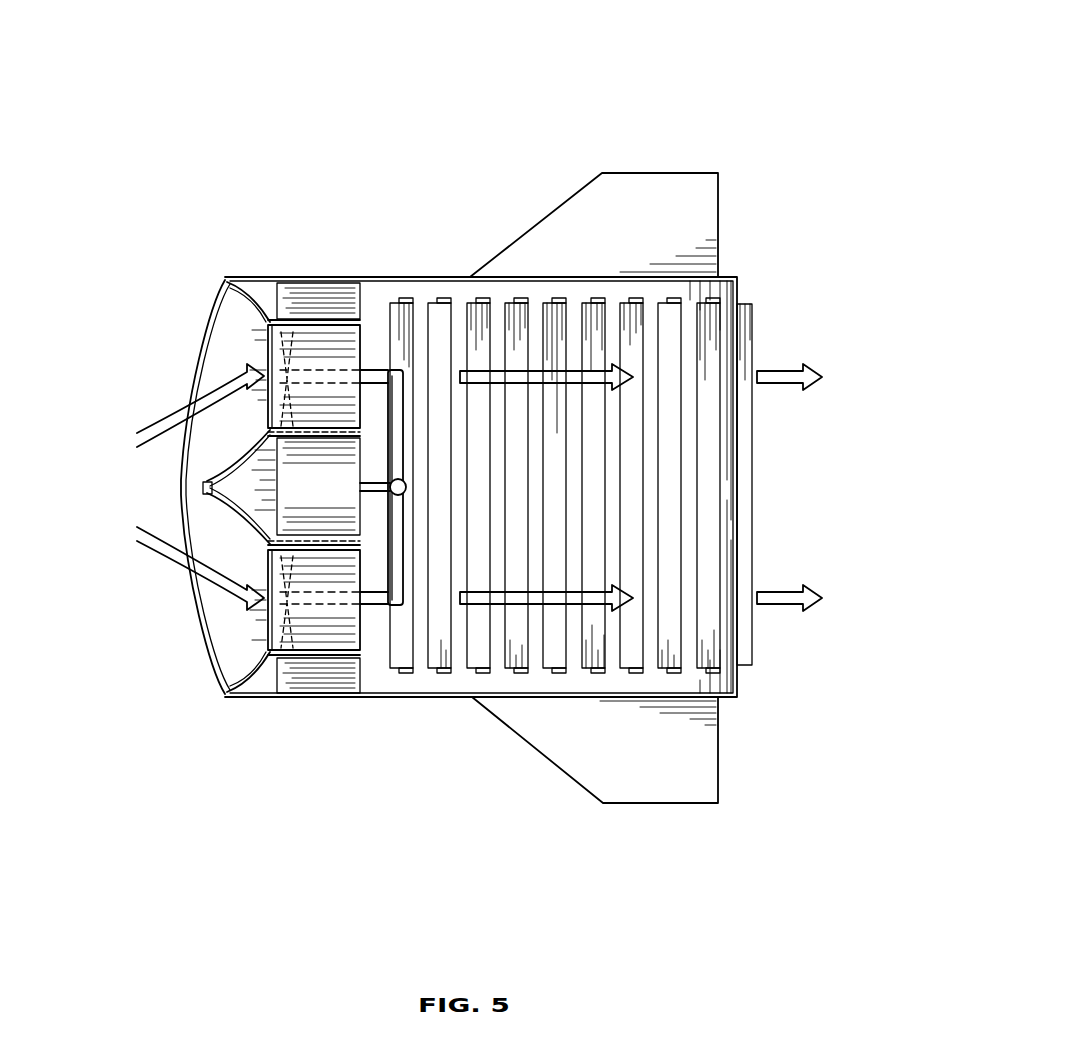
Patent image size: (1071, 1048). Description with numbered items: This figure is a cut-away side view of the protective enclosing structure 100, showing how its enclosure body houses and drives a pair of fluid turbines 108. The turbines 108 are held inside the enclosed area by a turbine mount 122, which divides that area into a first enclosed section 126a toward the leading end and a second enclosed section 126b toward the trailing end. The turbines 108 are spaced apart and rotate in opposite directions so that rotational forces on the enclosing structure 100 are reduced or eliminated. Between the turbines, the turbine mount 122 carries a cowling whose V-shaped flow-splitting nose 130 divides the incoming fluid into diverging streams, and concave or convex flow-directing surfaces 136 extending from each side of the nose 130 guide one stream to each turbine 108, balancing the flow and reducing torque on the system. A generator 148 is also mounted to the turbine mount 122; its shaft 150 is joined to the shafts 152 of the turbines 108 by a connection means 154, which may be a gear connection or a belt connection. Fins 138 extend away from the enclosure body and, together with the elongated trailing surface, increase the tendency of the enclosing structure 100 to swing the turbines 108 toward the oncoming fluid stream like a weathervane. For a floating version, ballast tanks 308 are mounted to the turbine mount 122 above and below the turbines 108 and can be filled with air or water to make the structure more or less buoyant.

The protective enclosing structure 100 is at (316, 61).
The fluid turbine 108 is at (335, 335).
The turbine mount 122 is at (255, 309).
The first enclosed section 126a is at (225, 660).
The second enclosed section 126b is at (577, 682).
The V-shaped flow-splitting nose 130 is at (201, 488).
The flow-directing surfaces 136 is at (242, 460).
The fins 138 is at (668, 178).
The generator 148 is at (350, 520).
The generator shaft 150 is at (373, 490).
The turbine shaft 152 is at (366, 372).
The connection means 154 is at (392, 480).
The ballast tank 308 is at (300, 292).